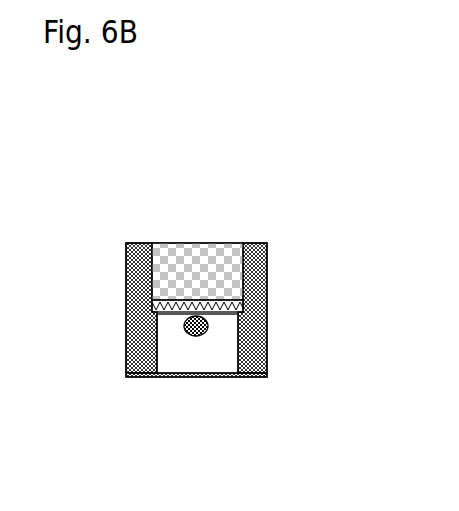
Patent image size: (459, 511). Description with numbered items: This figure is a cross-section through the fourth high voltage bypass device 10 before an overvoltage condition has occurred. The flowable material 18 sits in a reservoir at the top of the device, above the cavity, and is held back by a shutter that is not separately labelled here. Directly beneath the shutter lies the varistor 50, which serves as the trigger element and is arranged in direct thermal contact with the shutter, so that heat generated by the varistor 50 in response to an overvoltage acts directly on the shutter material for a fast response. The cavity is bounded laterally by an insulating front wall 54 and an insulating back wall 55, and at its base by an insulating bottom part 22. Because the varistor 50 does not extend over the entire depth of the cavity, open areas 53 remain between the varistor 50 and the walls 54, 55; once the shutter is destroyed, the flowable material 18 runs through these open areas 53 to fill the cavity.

The high voltage bypass device 10 is at (320, 155).
The flowable material 18 is at (192, 245).
The insulating bottom part 22 is at (153, 376).
The varistor 50 is at (208, 327).
The open areas 53 is at (214, 347).
The insulating front wall 54 is at (126, 282).
The insulating back wall 55 is at (267, 282).